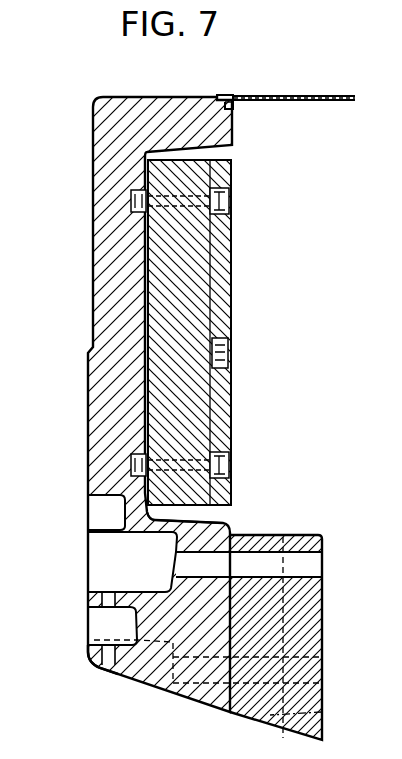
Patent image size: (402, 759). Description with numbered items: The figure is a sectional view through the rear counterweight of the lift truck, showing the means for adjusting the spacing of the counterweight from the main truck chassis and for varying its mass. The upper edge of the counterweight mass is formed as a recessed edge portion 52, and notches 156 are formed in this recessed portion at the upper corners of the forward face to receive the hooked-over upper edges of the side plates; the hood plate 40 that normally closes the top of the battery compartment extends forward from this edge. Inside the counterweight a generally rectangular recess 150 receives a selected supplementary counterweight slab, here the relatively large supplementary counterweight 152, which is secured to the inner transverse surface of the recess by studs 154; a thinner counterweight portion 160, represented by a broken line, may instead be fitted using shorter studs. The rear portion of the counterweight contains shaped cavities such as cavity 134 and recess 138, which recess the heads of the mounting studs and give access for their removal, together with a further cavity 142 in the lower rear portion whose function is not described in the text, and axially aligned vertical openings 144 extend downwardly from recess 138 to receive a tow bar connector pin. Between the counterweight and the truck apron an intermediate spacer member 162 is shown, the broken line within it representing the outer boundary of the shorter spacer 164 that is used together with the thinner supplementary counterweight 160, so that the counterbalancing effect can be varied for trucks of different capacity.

The hood plate 40 is at (352, 101).
The recessed edge portion 52 is at (218, 95).
The cavity 134 is at (160, 690).
The cavity 138 is at (145, 590).
The groove 142 is at (98, 622).
The vertical openings 144 is at (105, 670).
The recess 150 is at (205, 512).
The supplementary counterweight 152 is at (220, 287).
The studs 154 is at (233, 175).
The notches 156 is at (237, 107).
The counterweight portion 160 is at (180, 256).
The spacer member 162 is at (310, 617).
The spacer member 164 is at (322, 712).